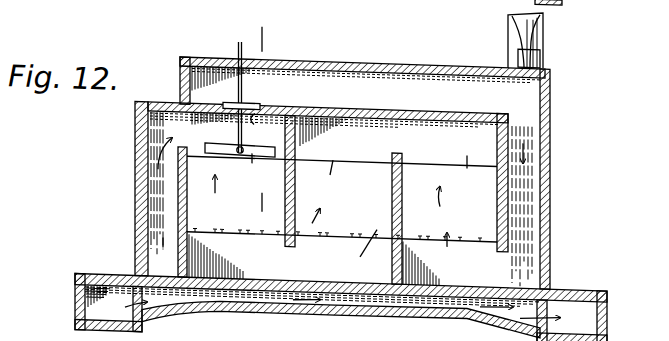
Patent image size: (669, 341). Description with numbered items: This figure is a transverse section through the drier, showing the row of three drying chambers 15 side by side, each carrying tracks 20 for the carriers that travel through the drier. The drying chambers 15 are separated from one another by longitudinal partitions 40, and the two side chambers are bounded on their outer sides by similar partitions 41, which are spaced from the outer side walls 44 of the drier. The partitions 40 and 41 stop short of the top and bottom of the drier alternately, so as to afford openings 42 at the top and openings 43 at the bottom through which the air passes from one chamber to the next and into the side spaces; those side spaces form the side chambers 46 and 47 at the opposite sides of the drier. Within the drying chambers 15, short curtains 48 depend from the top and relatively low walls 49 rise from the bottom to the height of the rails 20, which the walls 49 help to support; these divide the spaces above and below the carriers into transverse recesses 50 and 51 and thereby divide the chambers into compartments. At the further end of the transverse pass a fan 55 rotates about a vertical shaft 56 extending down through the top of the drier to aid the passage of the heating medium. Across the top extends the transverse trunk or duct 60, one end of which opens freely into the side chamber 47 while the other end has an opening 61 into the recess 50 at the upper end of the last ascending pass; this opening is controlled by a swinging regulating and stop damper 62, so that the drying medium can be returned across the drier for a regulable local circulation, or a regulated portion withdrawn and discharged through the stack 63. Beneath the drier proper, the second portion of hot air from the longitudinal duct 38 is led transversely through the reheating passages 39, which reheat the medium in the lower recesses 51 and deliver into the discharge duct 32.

The drying chambers 15 is at (347, 202).
The tracks 20 is at (225, 230).
The discharge duct 32 is at (570, 302).
The longitudinal duct 38 is at (103, 289).
The reheating chambers or passages 39 is at (340, 297).
The longitudinal partitions 40 is at (296, 189).
The outer partitions 41 is at (187, 212).
The openings 42 is at (208, 138).
The openings 43 is at (262, 244).
The outer side walls 44 is at (135, 222).
The side chambers 46 is at (167, 183).
The side chambers 47 is at (525, 181).
The curtains 48 is at (342, 170).
The low walls 49 is at (232, 231).
The transverse recesses 50 is at (340, 142).
The transverse recesses 51 is at (216, 256).
The fan 55 is at (202, 177).
The vertical shaft 56 is at (238, 39).
The transverse trunk or duct 60 is at (368, 58).
The opening 61 is at (267, 139).
The damper 62 is at (247, 100).
The stack 63 is at (544, 30).